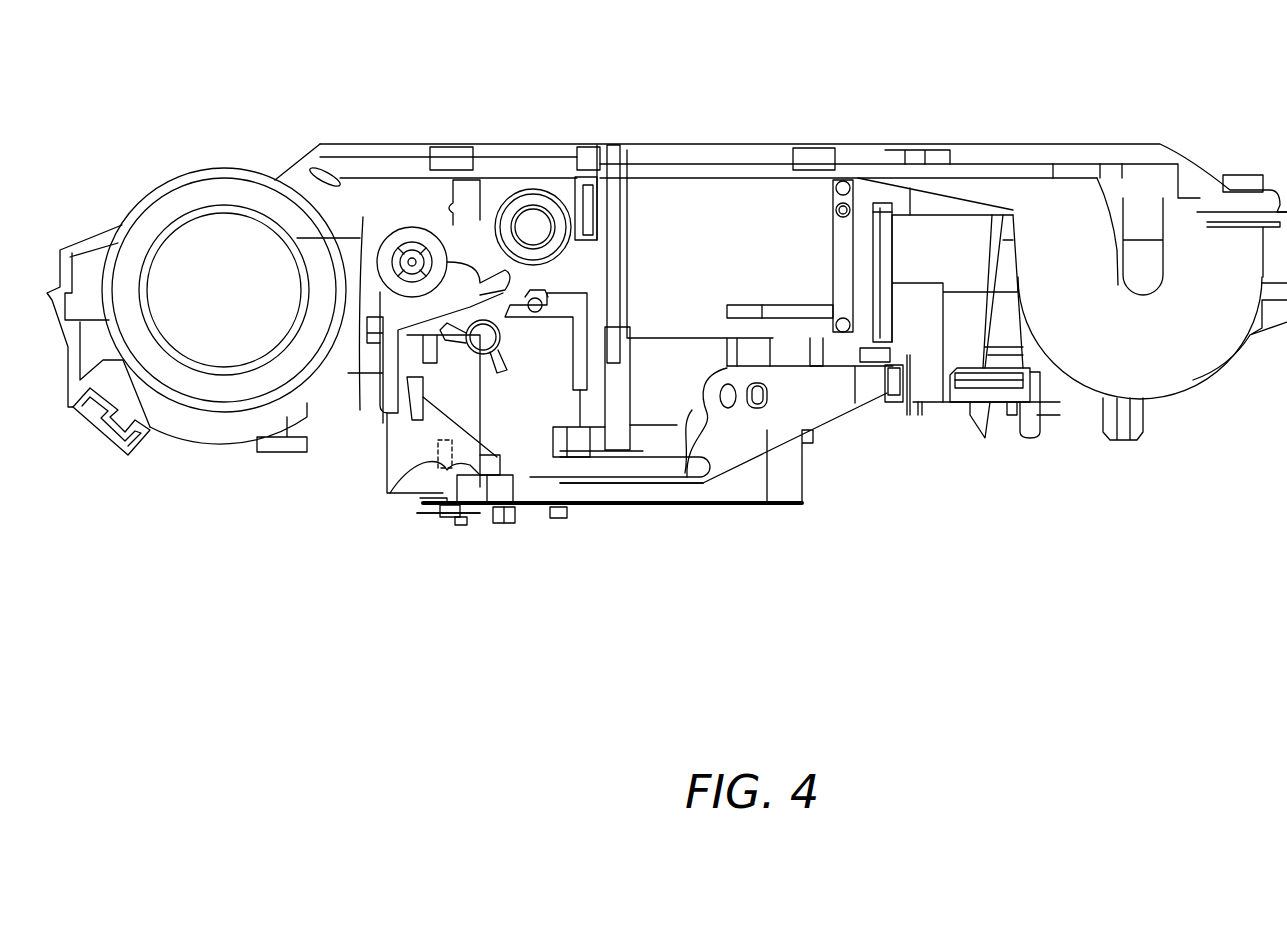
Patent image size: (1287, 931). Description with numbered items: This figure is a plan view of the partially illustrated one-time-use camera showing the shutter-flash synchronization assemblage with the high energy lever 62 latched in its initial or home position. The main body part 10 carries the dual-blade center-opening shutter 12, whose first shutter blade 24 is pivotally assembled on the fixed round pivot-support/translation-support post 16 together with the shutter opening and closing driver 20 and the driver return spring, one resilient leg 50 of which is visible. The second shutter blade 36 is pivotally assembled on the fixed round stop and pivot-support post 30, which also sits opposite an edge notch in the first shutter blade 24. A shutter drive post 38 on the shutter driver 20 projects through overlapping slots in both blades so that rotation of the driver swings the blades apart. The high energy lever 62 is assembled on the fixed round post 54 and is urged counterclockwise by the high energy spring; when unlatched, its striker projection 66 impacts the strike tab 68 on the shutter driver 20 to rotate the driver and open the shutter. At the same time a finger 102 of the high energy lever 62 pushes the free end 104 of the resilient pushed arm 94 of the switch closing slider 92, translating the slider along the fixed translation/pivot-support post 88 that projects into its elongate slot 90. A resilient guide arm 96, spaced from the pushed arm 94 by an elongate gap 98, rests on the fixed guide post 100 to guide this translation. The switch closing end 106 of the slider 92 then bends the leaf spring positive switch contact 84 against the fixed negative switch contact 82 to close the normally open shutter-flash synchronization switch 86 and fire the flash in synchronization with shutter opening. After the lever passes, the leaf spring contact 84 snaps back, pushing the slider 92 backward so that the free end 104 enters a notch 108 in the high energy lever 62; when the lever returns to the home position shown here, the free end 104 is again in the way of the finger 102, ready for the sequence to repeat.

The main body part 10 is at (218, 118).
The dual-blade center-opening shutter 12 is at (623, 507).
The fixed round pivot-support/translation-support post 16 is at (462, 525).
The shutter opening and closing driver 20 is at (473, 495).
The first shutter blade 24 is at (757, 503).
The fixed round stop and pivot-support post 30 is at (570, 518).
The second shutter blade 36 is at (737, 507).
The shutter drive post 38 is at (517, 517).
The resilient leg of the driver return spring 50 is at (440, 517).
The fixed round post 54 is at (398, 242).
The high energy lever 62 is at (411, 232).
The striker projection 66 is at (440, 447).
The strike tab 68 is at (410, 490).
The fixed negative switch contact 82 is at (913, 428).
The leaf spring positive switch contact 84 is at (885, 403).
The shutter-flash synchronization switch 86 is at (908, 432).
The fixed translation/pivot-support post 88 is at (772, 390).
The elongate slot 90 is at (737, 363).
The switch closing slider 92 is at (785, 437).
The resilient pushed arm 94 is at (685, 373).
The resilient guide arm 96 is at (698, 420).
The elongate gap 98 is at (653, 467).
The fixed guide post 100 is at (612, 510).
The finger 102 is at (498, 463).
The free end 104 is at (563, 427).
The switch closing end 106 is at (873, 377).
The notch 108 is at (425, 495).